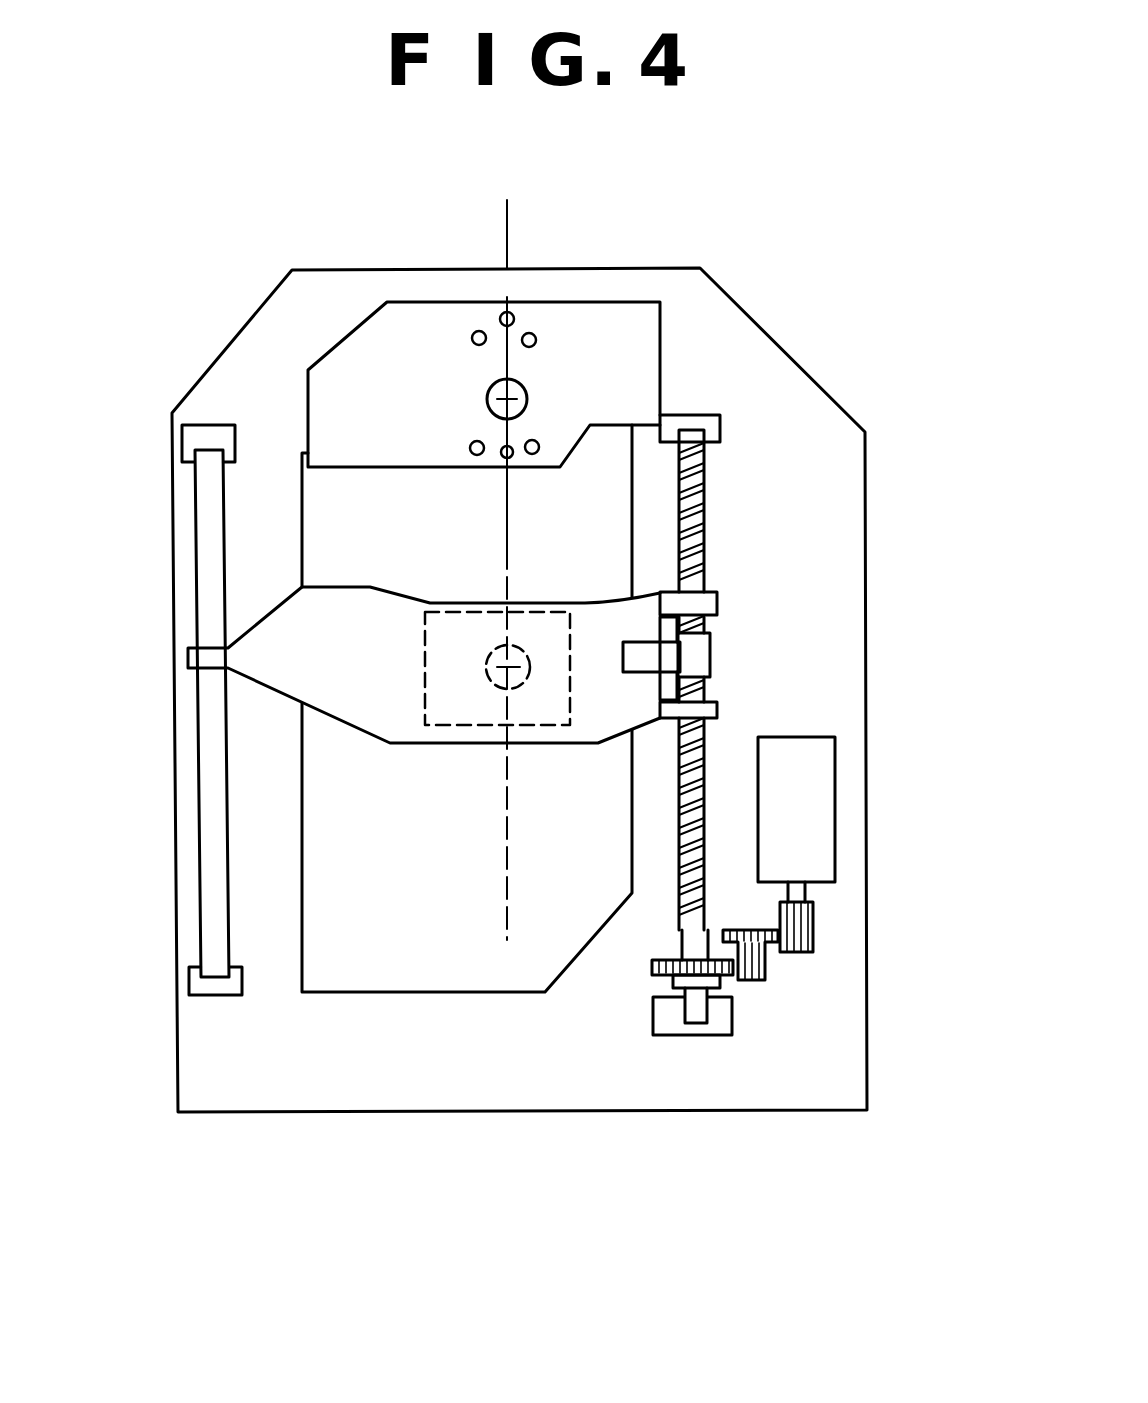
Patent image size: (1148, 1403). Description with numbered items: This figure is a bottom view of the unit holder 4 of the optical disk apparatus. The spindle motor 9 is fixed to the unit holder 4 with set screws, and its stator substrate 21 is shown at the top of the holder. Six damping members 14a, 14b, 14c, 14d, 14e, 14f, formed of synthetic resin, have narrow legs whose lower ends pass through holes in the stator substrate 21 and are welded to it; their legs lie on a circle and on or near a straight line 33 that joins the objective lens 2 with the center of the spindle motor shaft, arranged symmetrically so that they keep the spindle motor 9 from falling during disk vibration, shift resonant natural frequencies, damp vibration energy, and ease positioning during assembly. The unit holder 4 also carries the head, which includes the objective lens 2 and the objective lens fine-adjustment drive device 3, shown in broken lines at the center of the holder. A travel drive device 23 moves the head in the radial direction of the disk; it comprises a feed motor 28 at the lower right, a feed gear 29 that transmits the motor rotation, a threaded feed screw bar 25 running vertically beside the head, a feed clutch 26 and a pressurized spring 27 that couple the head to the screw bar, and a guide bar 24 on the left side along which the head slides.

The objective lens 2 is at (493, 680).
The objective lens fine-adjustment drive device 3 is at (547, 695).
The unit holder 4 is at (777, 385).
The spindle motor 9 is at (338, 342).
The damping member 14a is at (514, 313).
The damping member 14b is at (500, 458).
The damping member 14c is at (537, 333).
The damping member 14d is at (478, 330).
The damping member 14e is at (534, 456).
The damping member 14f is at (470, 453).
The stator substrate 21 is at (645, 323).
The travel drive device 23 is at (373, 674).
The guide bar 24 is at (215, 900).
The feed screw bar 25 is at (698, 497).
The feed clutch 26 is at (698, 648).
The pressurized spring 27 is at (655, 660).
The feed motor 28 is at (820, 820).
The feed gear 29 is at (743, 1002).
The straight line 33 is at (509, 253).